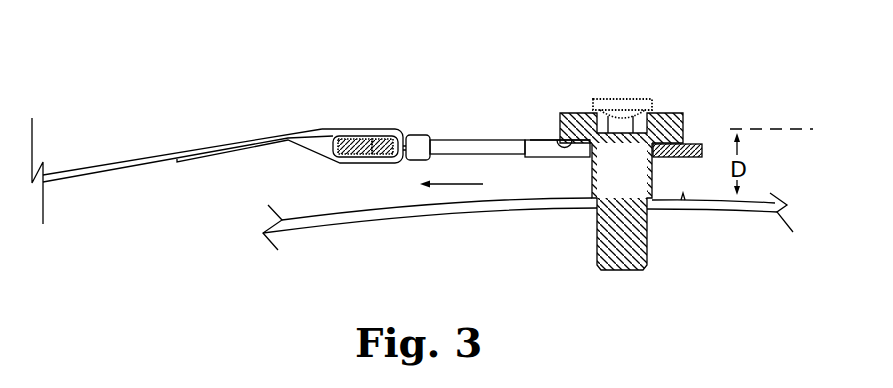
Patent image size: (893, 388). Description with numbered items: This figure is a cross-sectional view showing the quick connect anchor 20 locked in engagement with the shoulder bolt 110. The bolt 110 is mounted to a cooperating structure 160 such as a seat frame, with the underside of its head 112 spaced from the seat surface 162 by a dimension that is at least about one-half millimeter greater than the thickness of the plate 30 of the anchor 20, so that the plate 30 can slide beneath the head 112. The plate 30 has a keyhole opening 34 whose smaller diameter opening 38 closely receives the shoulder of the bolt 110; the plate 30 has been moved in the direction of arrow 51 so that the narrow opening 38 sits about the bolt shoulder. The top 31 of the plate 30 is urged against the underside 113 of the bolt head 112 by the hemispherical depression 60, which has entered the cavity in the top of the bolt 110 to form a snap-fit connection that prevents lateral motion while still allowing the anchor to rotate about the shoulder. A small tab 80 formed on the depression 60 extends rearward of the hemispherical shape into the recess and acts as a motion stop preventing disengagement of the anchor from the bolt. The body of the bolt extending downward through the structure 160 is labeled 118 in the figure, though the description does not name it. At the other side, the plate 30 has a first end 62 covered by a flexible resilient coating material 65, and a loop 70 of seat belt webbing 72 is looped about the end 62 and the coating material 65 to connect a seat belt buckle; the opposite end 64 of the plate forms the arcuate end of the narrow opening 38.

The quick connect anchor 20 is at (293, 96).
The plate 30 is at (420, 121).
The top of the plate 31 is at (528, 140).
The keyhole opening 34 is at (447, 140).
The smaller diameter opening 38 is at (655, 158).
The arrow 51 is at (468, 184).
The depression 60 is at (614, 100).
The first end 62 is at (378, 139).
The opposite end 64 is at (703, 143).
The resilient coating material 65 is at (353, 139).
The loop 70 is at (287, 135).
The seat belt webbing 72 is at (90, 167).
The tab 80 is at (647, 112).
The shoulder bolt 110 is at (697, 121).
The head 112 is at (557, 143).
The underside of the head 113 is at (547, 140).
The screw 118 is at (600, 252).
The cooperating structure 160 is at (722, 212).
The seat surface 162 is at (683, 195).